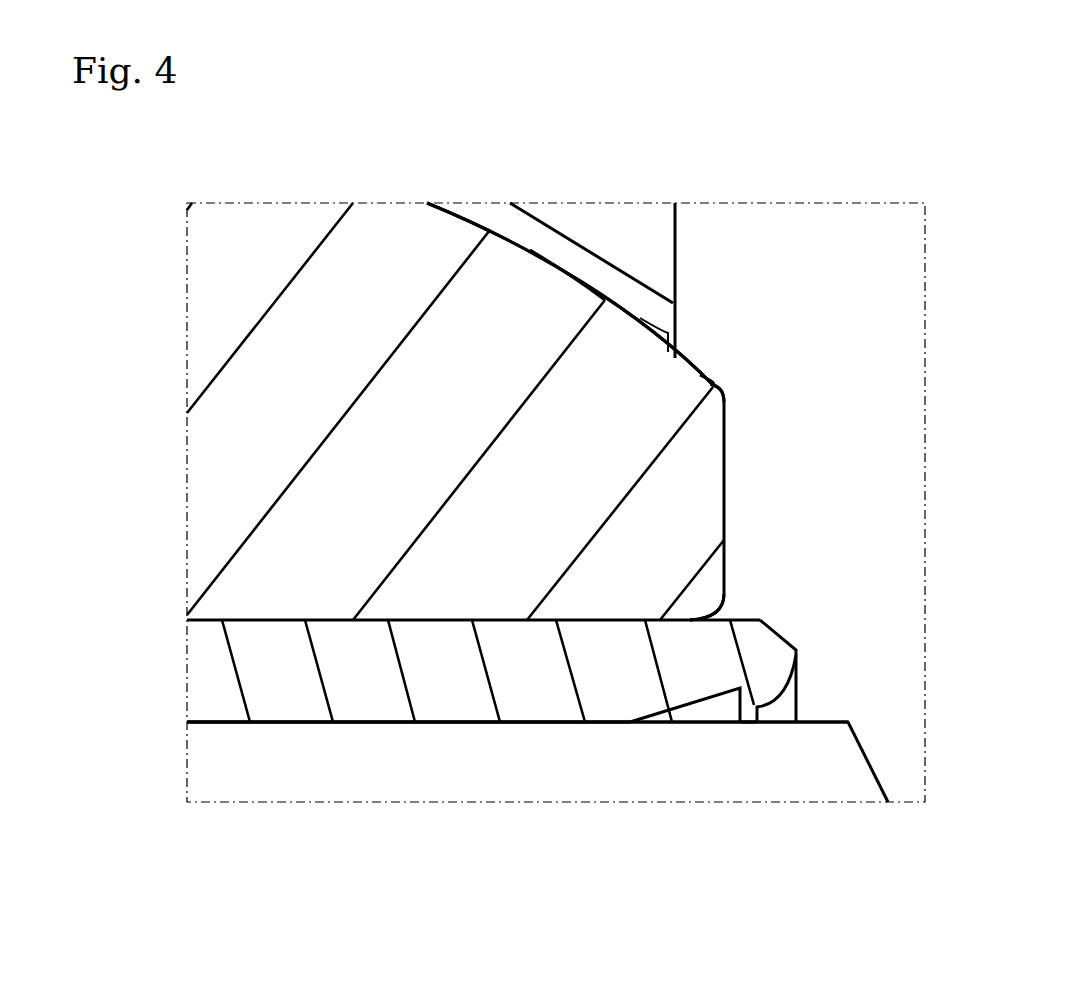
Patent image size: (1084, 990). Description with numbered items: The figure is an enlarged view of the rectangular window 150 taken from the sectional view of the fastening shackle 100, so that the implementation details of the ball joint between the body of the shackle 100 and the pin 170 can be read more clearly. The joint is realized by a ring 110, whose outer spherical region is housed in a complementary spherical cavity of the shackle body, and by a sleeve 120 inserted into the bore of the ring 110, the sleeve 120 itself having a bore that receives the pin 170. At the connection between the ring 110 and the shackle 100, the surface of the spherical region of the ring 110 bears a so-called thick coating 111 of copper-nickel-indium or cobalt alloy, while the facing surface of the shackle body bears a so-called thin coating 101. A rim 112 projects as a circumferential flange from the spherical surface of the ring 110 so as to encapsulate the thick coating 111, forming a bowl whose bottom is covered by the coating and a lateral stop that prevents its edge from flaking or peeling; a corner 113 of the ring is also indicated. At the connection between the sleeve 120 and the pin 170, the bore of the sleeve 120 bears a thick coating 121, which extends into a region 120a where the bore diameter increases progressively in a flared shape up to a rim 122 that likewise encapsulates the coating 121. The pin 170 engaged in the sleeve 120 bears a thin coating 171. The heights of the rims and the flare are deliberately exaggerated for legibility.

The fastening shackle 100 is at (660, 270).
The thin coating 101 is at (582, 295).
The ring 110 is at (707, 508).
The thick coating 111 is at (554, 262).
The rim 112 is at (713, 380).
The lower corner 113 is at (727, 590).
The sleeve 120 is at (790, 640).
The flared region 120a is at (696, 697).
The thick coating 121 is at (462, 730).
The rim 122 is at (742, 722).
The rectangular window 150 is at (727, 197).
The pin 170 is at (817, 733).
The thin coating 171 is at (392, 712).